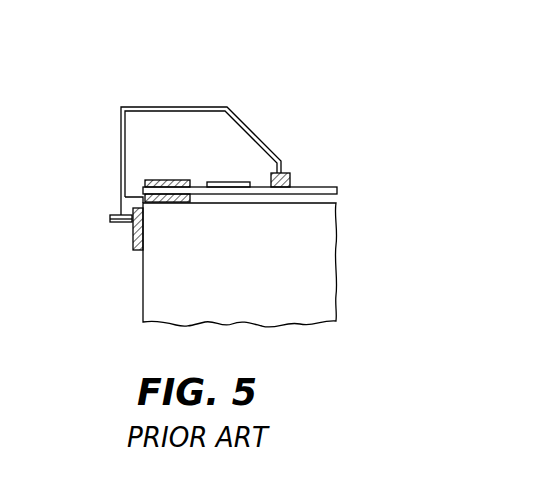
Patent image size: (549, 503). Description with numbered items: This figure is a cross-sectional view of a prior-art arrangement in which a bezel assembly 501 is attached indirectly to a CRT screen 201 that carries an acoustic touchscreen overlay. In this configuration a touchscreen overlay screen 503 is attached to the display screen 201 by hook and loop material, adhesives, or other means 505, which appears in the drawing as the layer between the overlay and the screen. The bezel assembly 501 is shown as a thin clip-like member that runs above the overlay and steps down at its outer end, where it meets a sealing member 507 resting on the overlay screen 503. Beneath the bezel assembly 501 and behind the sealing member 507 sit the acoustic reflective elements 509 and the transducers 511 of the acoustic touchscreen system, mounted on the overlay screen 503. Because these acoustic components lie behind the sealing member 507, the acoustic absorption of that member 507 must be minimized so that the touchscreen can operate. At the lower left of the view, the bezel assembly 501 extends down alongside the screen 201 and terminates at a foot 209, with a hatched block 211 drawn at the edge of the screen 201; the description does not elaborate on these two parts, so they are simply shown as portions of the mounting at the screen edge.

The CRT screen 201 is at (258, 270).
The foot of clip 209 is at (118, 225).
The side contact block 211 is at (127, 253).
The bezel assembly 501 is at (214, 88).
The touchscreen overlay screen 503 is at (337, 192).
The attachment means 505 is at (143, 197).
The sealing member 507 is at (289, 175).
The acoustic reflective elements 509 is at (232, 182).
The transducers 511 is at (163, 178).